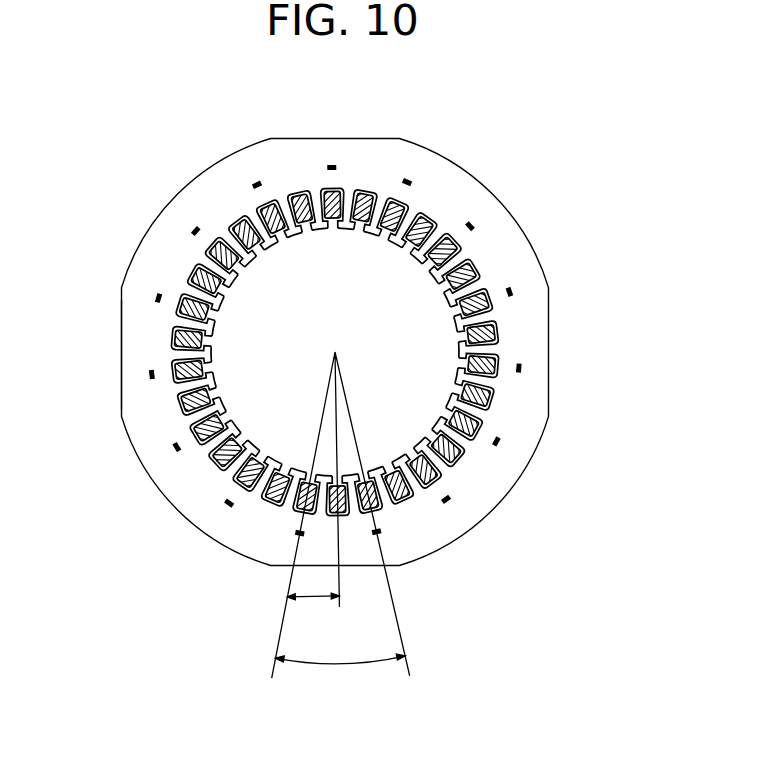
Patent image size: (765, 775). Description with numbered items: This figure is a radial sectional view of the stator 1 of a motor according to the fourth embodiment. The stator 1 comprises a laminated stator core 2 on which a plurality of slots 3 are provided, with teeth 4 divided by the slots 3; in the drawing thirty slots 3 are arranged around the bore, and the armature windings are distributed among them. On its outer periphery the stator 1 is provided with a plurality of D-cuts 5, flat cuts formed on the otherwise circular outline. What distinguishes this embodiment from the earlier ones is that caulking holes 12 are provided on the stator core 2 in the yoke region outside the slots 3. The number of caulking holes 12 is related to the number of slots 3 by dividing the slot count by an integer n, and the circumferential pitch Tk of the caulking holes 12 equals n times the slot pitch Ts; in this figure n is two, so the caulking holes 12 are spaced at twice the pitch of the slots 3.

The stator 1 is at (470, 175).
The stator core 2 is at (505, 240).
The slots 3 is at (495, 328).
The teeth 4 is at (495, 388).
The D-cuts 5 is at (120, 319).
The caulking holes 12 is at (222, 504).